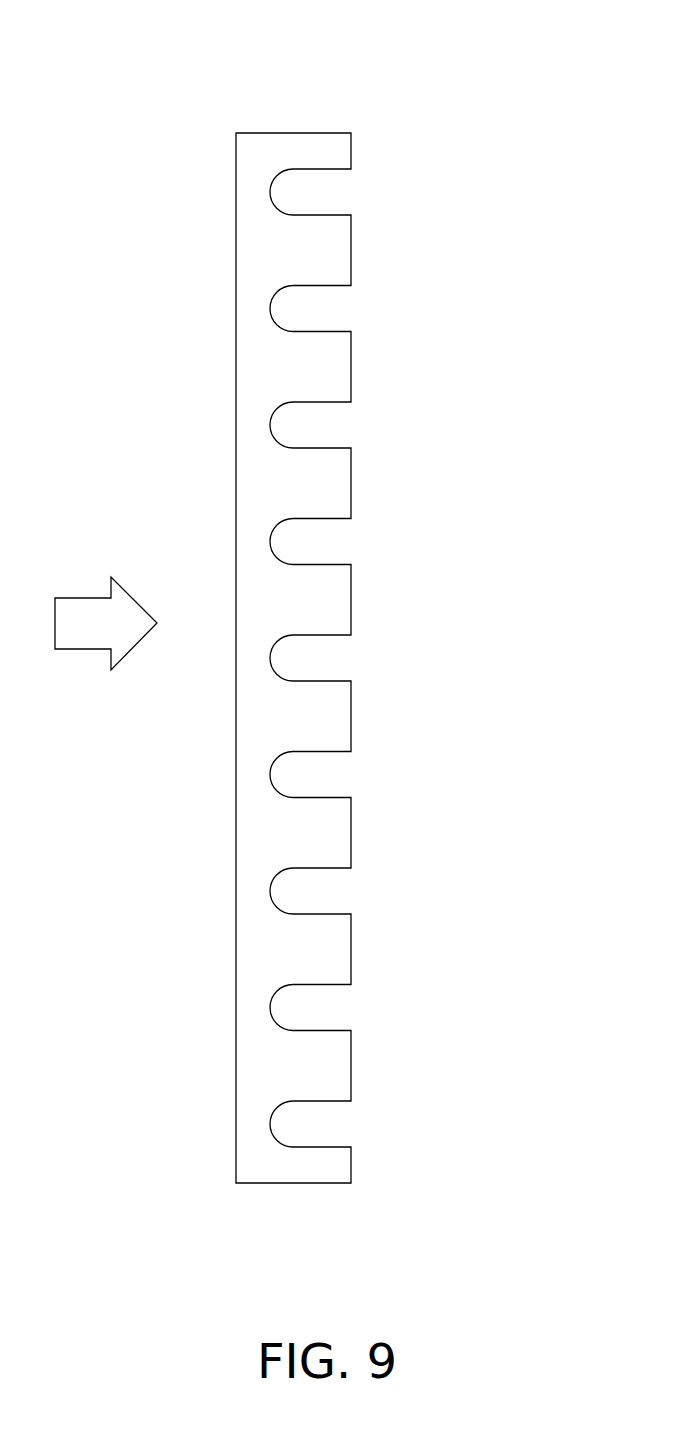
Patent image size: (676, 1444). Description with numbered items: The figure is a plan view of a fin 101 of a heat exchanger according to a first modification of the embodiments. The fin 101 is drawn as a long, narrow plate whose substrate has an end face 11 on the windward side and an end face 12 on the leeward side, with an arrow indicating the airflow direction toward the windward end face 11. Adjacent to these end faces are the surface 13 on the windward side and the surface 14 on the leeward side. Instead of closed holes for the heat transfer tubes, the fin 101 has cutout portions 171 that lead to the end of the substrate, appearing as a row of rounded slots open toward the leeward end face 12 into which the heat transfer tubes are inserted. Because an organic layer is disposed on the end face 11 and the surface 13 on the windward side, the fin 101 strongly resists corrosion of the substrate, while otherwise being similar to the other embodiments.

The fin 101 is at (403, 130).
The cutout portions 171 is at (300, 425).
The end face on the windward side 11 is at (231, 722).
The end face on the leeward side 12 is at (356, 715).
The surface on the windward side 13 is at (260, 1073).
The surface on the leeward side 14 is at (332, 1067).